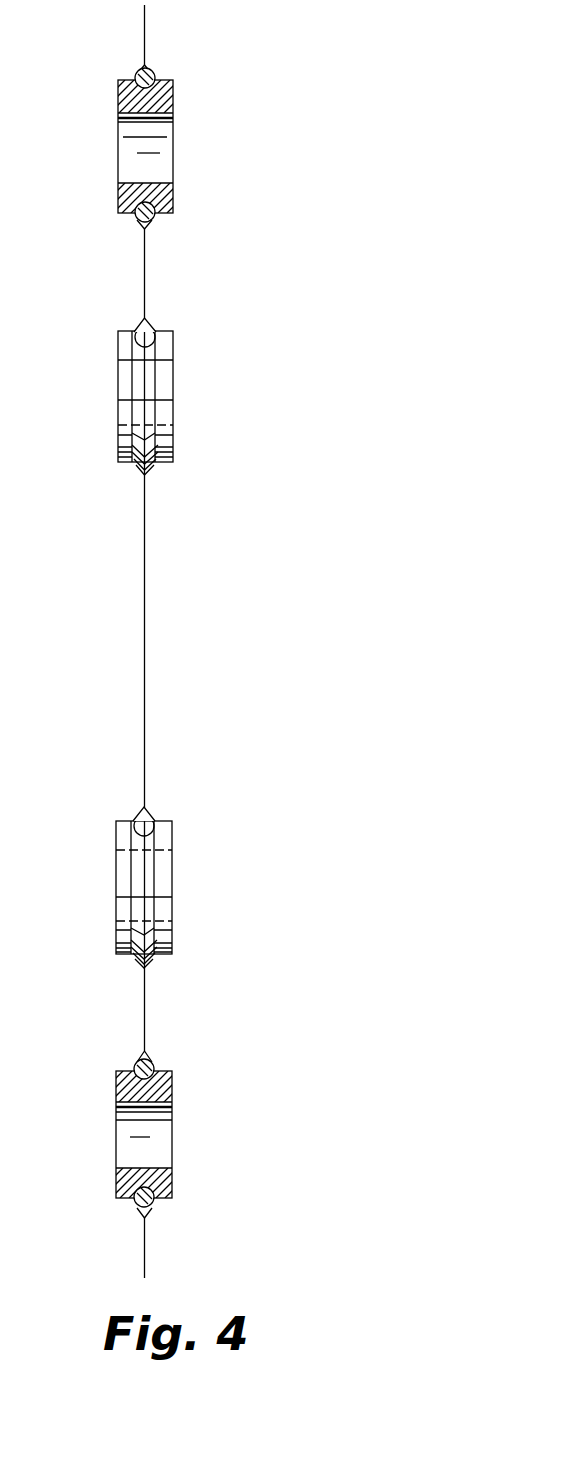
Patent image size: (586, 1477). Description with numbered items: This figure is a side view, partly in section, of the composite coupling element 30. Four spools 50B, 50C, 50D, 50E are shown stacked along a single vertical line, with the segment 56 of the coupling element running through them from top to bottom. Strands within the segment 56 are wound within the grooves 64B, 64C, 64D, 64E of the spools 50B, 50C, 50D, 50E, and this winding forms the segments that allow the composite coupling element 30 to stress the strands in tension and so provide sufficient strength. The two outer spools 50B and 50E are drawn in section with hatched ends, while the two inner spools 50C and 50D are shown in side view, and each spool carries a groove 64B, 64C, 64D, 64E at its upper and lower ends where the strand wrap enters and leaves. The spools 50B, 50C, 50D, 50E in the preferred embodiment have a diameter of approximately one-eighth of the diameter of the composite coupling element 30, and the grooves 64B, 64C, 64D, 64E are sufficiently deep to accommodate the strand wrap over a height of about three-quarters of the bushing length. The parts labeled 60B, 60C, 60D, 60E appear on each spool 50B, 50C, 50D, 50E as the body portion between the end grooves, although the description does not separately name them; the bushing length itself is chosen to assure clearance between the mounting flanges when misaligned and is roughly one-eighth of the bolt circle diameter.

The composite coupling element 30 is at (358, 194).
The segment 56 is at (149, 284).
The spool 50B is at (150, 1124).
The spool 50C is at (158, 866).
The spool 50D is at (211, 389).
The spool 50E is at (188, 124).
The sleeve 60B is at (116, 1140).
The sleeve 60C is at (116, 890).
The sleeve 60D is at (173, 430).
The sleeve 60E is at (173, 152).
The groove 64B is at (152, 1055).
The groove 64C is at (151, 820).
The groove 64D is at (151, 331).
The groove 64E is at (151, 73).